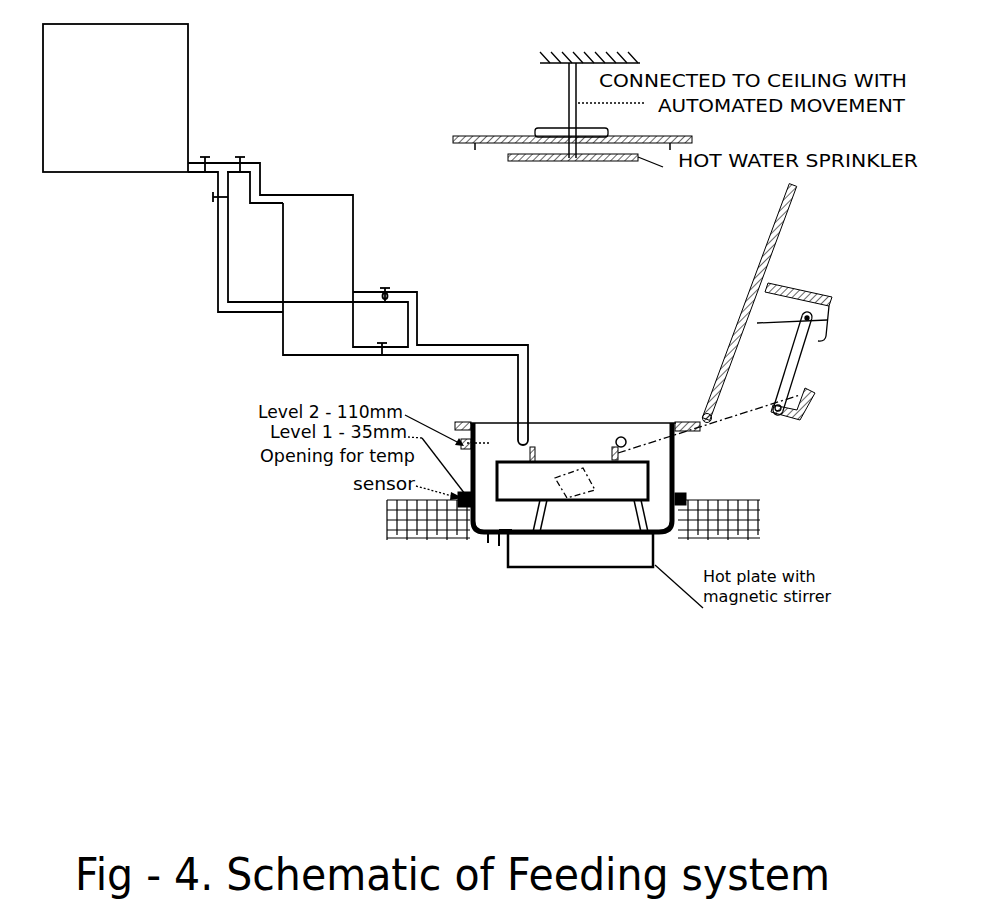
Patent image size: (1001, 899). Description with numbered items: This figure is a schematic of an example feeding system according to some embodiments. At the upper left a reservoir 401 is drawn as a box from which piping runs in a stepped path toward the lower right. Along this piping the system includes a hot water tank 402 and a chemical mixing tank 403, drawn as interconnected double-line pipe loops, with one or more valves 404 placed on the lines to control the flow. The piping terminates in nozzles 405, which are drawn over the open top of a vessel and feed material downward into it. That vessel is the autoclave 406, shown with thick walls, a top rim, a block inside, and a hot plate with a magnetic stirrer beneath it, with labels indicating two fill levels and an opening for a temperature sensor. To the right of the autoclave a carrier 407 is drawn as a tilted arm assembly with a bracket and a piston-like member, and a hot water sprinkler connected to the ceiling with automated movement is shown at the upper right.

The reservoir 401 is at (190, 75).
The hot water tank 402 is at (331, 188).
The chemical mixing tank 403 is at (276, 337).
The valve 404 is at (392, 289).
The nozzles 405 is at (529, 440).
The autoclave 406 is at (556, 480).
The carrier 407 is at (568, 498).